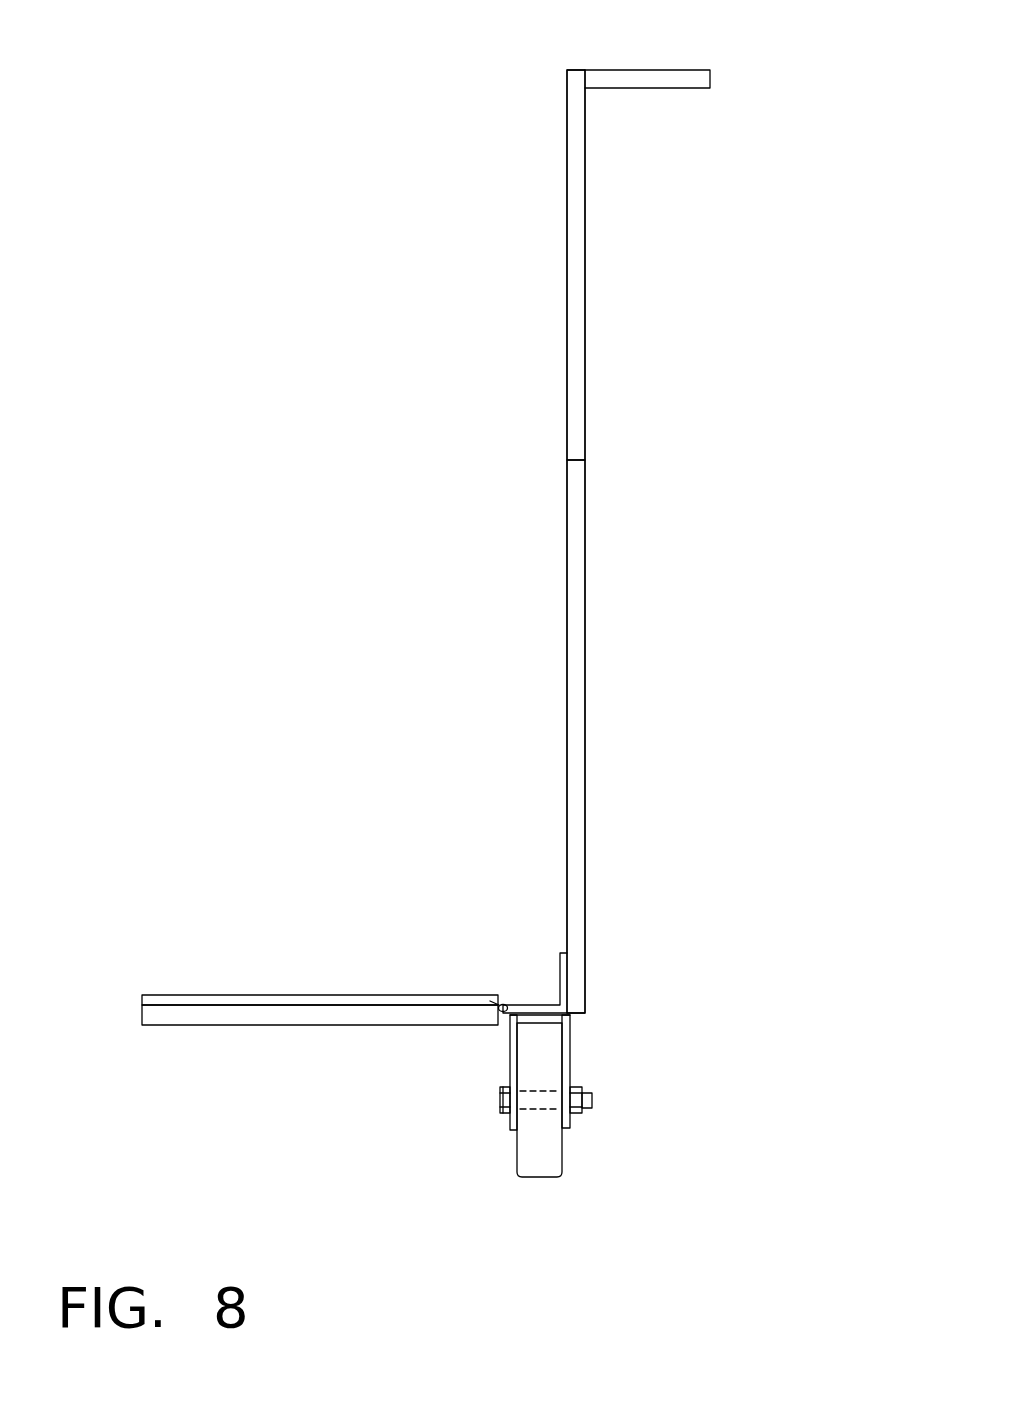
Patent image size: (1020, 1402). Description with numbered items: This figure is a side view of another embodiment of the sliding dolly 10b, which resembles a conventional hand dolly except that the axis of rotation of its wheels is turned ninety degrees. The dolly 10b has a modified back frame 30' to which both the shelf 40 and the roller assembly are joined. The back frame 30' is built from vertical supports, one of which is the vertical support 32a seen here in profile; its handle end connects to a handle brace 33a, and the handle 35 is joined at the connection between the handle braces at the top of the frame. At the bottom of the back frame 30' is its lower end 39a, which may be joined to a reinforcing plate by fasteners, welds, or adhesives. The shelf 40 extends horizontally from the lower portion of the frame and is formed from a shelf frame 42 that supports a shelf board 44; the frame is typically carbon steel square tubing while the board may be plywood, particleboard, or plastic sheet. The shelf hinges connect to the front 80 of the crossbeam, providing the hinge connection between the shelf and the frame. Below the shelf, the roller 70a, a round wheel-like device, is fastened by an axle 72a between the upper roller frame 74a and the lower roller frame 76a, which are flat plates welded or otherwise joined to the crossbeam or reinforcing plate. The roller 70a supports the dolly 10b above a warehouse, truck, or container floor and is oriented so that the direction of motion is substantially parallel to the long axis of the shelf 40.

The sliding dolly 10b is at (737, 210).
The back frame 30' is at (639, 541).
The handle brace 33a is at (585, 175).
The vertical support 32a is at (585, 530).
The handle 35 is at (638, 70).
The lower end of back frame 39a is at (566, 885).
The front of crossbeam 80 is at (500, 1005).
The shelf 40 is at (278, 1027).
The shelf board 44 is at (268, 995).
The shelf frame 42 is at (375, 1025).
The upper roller frame 74a is at (572, 1047).
The lower roller frame 76a is at (508, 1040).
The roller 70a is at (540, 1177).
The axle 72a is at (594, 1100).